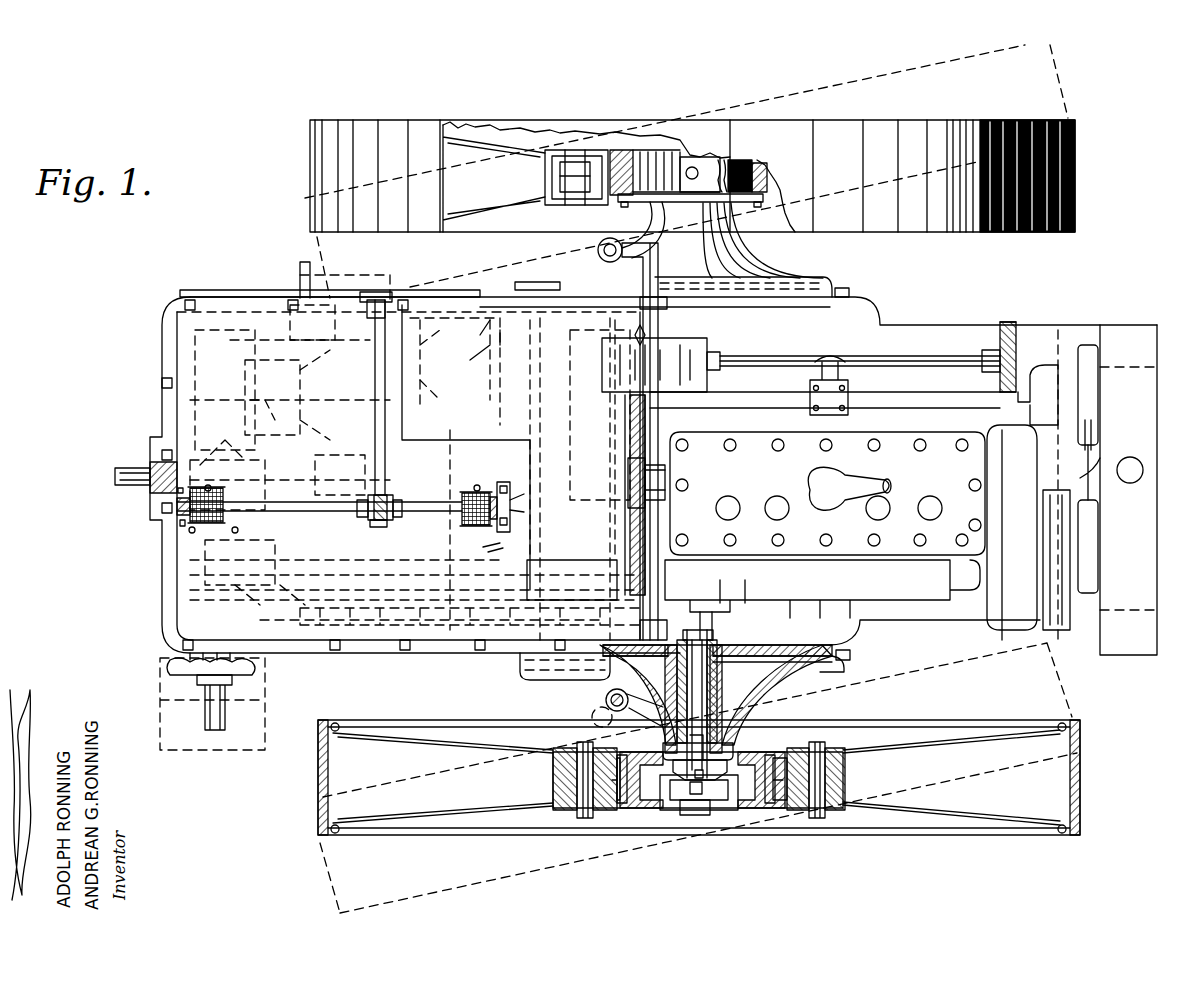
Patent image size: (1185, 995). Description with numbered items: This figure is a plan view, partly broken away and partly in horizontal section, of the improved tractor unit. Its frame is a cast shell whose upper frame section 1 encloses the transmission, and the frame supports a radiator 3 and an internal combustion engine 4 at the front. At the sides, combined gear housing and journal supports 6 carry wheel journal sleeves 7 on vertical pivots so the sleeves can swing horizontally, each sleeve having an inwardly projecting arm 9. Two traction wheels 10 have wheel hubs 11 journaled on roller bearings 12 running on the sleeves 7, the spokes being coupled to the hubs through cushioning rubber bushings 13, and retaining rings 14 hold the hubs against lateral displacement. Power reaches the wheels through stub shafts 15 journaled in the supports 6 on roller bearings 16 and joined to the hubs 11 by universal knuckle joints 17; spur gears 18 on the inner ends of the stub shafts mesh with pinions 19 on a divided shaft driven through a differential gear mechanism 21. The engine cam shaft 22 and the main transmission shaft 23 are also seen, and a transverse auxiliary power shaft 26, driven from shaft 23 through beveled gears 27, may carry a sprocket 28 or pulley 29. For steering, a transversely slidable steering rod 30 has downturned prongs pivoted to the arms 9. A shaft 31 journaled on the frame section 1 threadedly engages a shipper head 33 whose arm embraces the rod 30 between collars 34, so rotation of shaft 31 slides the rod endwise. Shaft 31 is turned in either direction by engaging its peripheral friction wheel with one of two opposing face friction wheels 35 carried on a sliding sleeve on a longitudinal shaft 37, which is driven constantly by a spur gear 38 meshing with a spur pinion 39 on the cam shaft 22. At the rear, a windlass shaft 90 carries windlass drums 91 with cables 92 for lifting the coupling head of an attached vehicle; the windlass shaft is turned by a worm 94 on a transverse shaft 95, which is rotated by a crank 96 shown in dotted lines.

The upper frame section 1 is at (380, 640).
The radiator 3 is at (993, 490).
The internal combustion engine 4 is at (825, 536).
The combined gear housing and journal support 6 is at (826, 284).
The wheel journal sleeve 7 is at (650, 810).
The inwardly projecting arm 9 is at (660, 238).
The traction wheel 10 is at (352, 140).
The wheel hub 11 is at (728, 815).
The roller bearing 12 is at (638, 812).
The rubber bushing 13 is at (565, 800).
The retaining ring 14 is at (753, 768).
The stub shaft 15 is at (725, 650).
The roller bearing 16 is at (790, 650).
The universal knuckle joint 17 is at (705, 160).
The spur gear 18 is at (845, 292).
The pinion 19 is at (530, 290).
The differential gear mechanism 21 is at (455, 618).
The cam shaft 22 is at (925, 402).
The main transmission shaft 23 is at (128, 485).
The auxiliary power shaft 26 is at (215, 732).
The beveled gears 27 is at (222, 492).
The sprocket 28 is at (175, 668).
The pulley 29 is at (265, 700).
The steering rod 30 is at (602, 255).
The shaft 31 is at (640, 533).
The shipper head 33 is at (665, 480).
The collar 34 is at (665, 465).
The face friction wheel 35 is at (680, 345).
The longitudinal shaft 37 is at (780, 365).
The spur gear 38 is at (1018, 340).
The spur pinion 39 is at (1005, 405).
The windlass shaft 90 is at (318, 512).
The windlass drum 91 is at (183, 525).
The cable 92 is at (185, 548).
The worm 94 is at (372, 527).
The transverse shaft 95 is at (375, 424).
The crank 96 is at (318, 297).